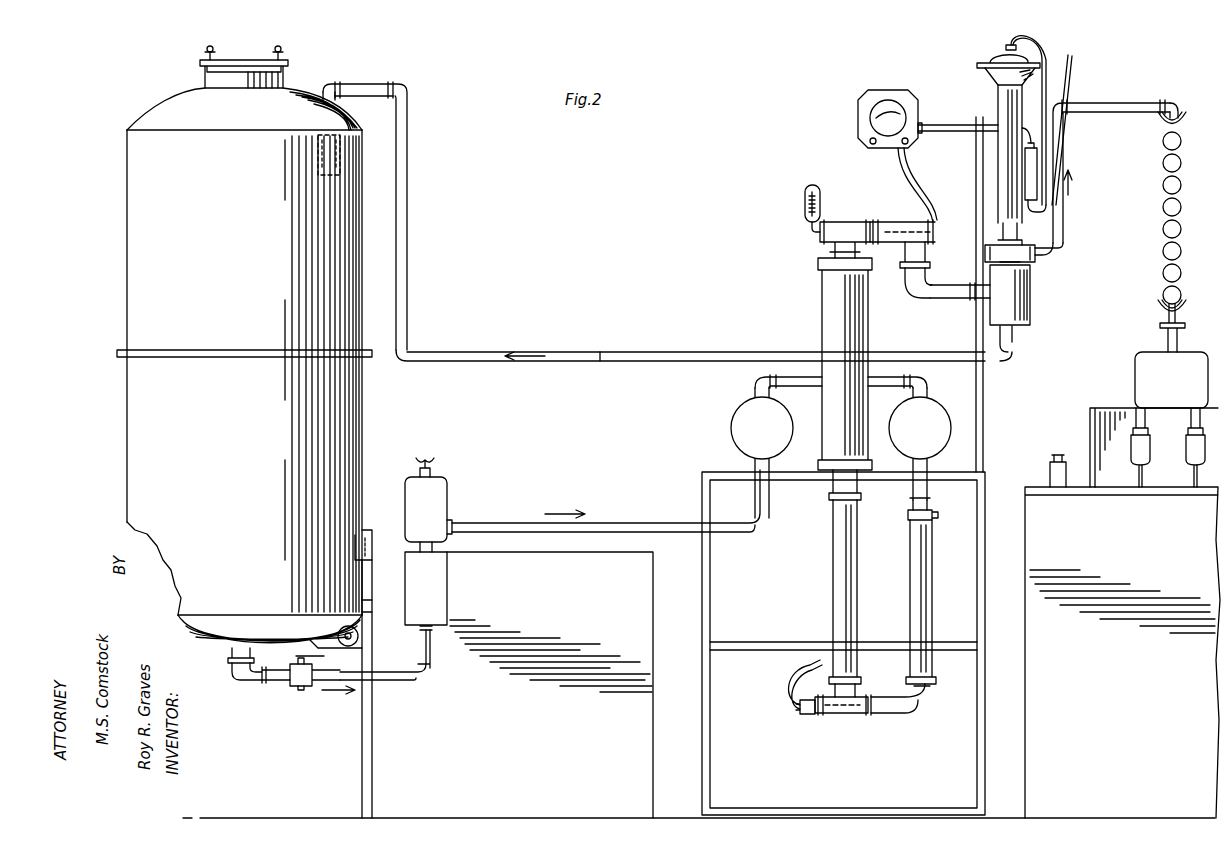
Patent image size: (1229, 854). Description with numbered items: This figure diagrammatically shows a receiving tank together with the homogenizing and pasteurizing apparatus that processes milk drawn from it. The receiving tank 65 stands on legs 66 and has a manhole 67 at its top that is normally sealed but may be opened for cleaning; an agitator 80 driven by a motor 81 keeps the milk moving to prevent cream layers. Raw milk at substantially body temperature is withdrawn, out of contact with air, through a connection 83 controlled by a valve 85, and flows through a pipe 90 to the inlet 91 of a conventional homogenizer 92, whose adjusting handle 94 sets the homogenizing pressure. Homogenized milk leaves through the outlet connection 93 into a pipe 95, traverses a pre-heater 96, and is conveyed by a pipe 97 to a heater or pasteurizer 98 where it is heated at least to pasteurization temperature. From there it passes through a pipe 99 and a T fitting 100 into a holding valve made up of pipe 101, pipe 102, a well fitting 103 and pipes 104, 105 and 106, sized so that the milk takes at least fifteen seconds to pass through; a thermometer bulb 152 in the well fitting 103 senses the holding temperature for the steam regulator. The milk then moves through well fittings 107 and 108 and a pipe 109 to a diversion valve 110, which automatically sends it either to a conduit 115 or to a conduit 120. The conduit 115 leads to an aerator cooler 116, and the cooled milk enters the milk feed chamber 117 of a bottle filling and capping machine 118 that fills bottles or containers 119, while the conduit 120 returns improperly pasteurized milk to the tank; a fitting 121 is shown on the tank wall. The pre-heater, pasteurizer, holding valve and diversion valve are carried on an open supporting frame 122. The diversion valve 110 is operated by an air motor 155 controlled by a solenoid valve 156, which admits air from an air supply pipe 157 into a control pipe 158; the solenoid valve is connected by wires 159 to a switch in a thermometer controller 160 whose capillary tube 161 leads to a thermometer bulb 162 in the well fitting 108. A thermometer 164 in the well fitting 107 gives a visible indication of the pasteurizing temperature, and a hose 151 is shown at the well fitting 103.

The receiving tank 65 is at (125, 226).
The legs 66 is at (372, 752).
The manhole 67 is at (244, 80).
The agitator 80 is at (365, 522).
The motor 81 is at (358, 640).
The connection 83 is at (272, 680).
The valve 85 is at (298, 686).
The pipe 90 is at (392, 680).
The inlet 91 is at (405, 584).
The homogenizer 92 is at (460, 718).
The outlet connection 93 is at (440, 500).
The adjusting handle 94 is at (426, 458).
The pipe 95 is at (615, 522).
The pre-heater 96 is at (731, 428).
The pipe 97 is at (792, 376).
The heater or pasteurizer 98 is at (925, 414).
The pipe 99 is at (913, 492).
The T fitting 100 is at (908, 510).
The pipe 101 is at (932, 574).
The pipe 102 is at (890, 713).
The well fitting 103 is at (848, 713).
The pipe 104 is at (843, 590).
The pipe 105 is at (830, 493).
The pipe 106 is at (857, 324).
The well fitting 107 is at (844, 222).
The well fitting 108 is at (906, 222).
The pipe 109 is at (966, 300).
The diversion valve 110 is at (1030, 296).
The conduit 115 is at (1064, 220).
The aerator cooler 116 is at (1162, 235).
The milk feed chamber 117 is at (1135, 375).
The bottle filling and capping machine 118 is at (1072, 420).
The bottles or containers 119 is at (1186, 452).
The conduit 120 is at (600, 351).
The tank fitting 121 is at (340, 155).
The supporting frame 122 is at (984, 445).
The hose 151 is at (793, 668).
The thermometer bulb 152 is at (806, 714).
The air motor 155 is at (985, 58).
The solenoid valve 156 is at (1040, 157).
The air supply pipe 157 is at (1066, 80).
The control pipe 158 is at (1040, 48).
The wires 159 is at (940, 124).
The thermometer controller 160 is at (857, 115).
The capillary tube 161 is at (912, 184).
The thermometer bulb 162 is at (930, 240).
The thermometer 164 is at (803, 204).